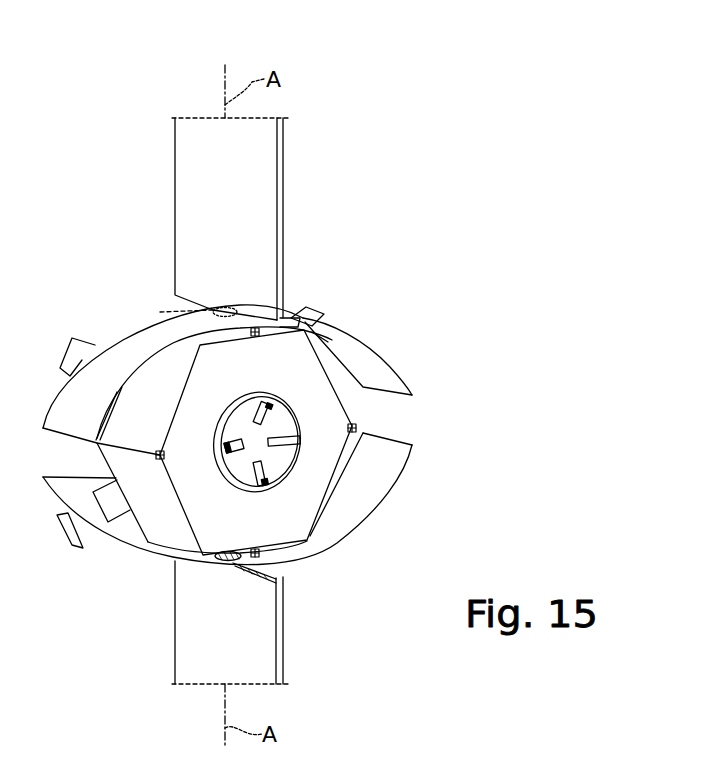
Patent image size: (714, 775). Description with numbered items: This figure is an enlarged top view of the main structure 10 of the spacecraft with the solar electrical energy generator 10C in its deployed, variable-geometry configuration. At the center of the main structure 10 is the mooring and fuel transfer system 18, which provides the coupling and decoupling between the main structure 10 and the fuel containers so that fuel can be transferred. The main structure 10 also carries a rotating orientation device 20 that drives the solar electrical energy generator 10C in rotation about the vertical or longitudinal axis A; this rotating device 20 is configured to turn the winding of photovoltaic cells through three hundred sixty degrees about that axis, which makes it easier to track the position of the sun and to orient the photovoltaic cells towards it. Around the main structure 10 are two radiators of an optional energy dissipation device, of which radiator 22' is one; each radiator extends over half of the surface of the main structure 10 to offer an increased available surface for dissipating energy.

The main structure 10 is at (375, 310).
The solar electrical energy generator 10C is at (283, 185).
The mooring and fuel transfer system 18 is at (281, 437).
The rotating orientation device 20 is at (183, 310).
The radiator 22' is at (392, 356).